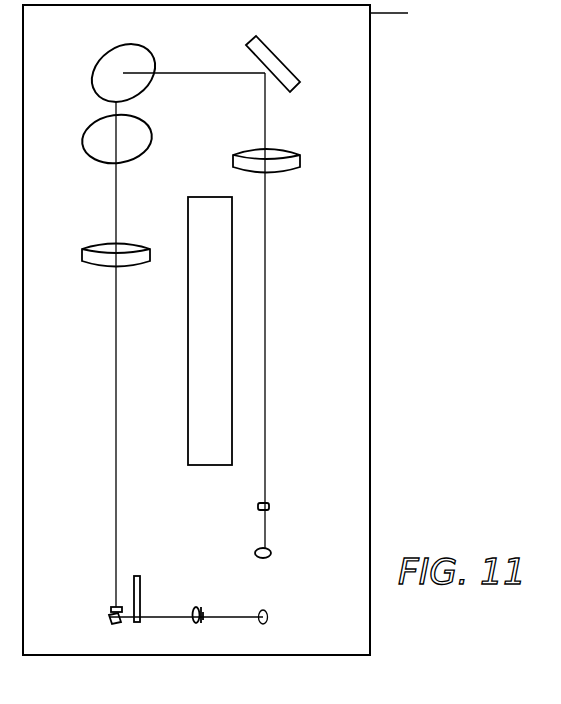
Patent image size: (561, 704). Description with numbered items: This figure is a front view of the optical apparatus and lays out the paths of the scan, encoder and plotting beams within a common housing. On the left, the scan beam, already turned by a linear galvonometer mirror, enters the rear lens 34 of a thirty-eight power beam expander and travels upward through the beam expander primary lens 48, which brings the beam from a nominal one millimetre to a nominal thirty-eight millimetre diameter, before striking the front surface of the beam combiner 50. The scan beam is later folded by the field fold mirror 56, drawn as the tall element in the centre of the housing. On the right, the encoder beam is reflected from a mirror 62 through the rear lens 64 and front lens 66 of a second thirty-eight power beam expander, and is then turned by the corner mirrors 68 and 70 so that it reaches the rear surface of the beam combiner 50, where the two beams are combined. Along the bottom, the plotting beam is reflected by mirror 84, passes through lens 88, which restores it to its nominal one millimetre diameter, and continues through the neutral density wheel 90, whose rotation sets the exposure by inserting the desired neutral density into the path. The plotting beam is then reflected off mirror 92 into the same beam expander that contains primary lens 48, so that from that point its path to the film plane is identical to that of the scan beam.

The rear lens 34 is at (112, 607).
The front lens 48 is at (86, 264).
The beam combiner 50 is at (150, 150).
The field fold mirror 56 is at (190, 430).
The mirror 62 is at (272, 552).
The rear lens 64 is at (270, 505).
The front lens 66 is at (297, 168).
The corner mirror 68 is at (297, 86).
The corner mirror 70 is at (152, 58).
The mirror 84 is at (203, 620).
The lens 88 is at (194, 607).
The neutral density wheel 90 is at (142, 582).
The mirror 92 is at (116, 623).